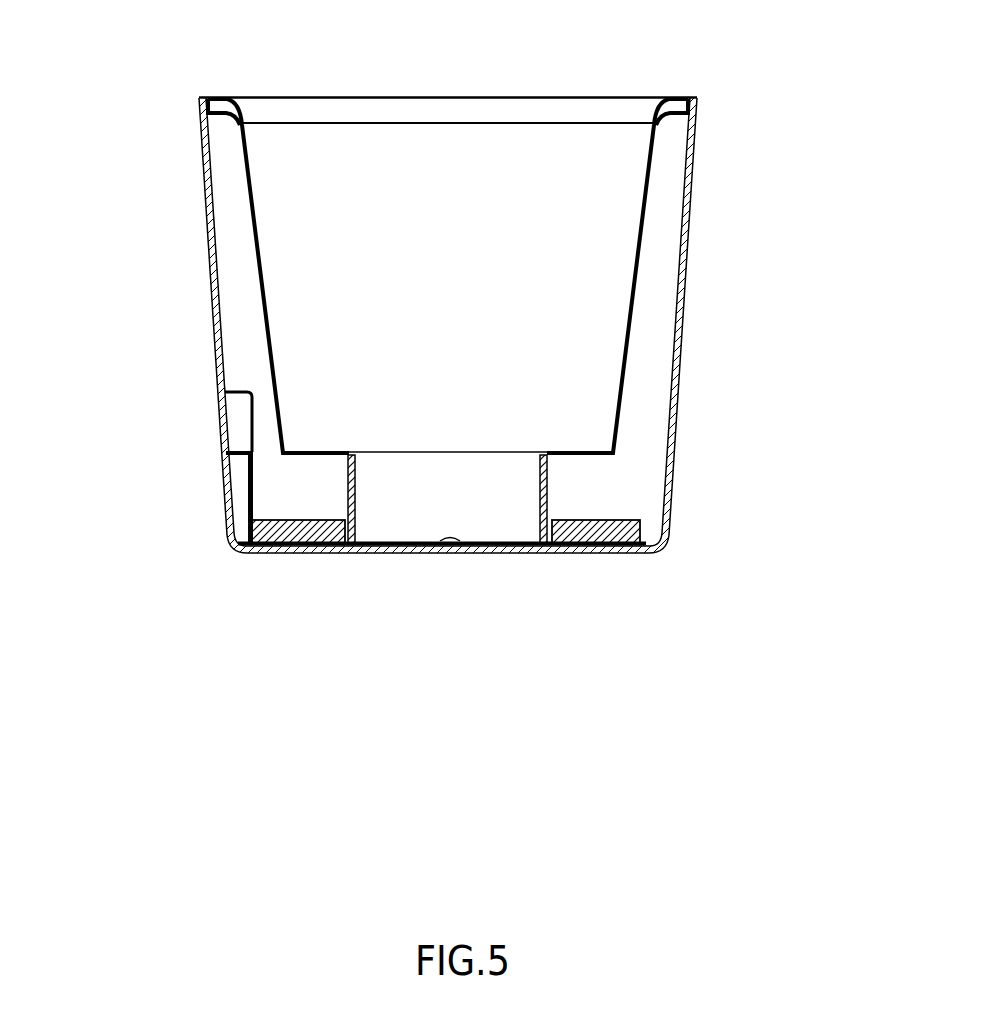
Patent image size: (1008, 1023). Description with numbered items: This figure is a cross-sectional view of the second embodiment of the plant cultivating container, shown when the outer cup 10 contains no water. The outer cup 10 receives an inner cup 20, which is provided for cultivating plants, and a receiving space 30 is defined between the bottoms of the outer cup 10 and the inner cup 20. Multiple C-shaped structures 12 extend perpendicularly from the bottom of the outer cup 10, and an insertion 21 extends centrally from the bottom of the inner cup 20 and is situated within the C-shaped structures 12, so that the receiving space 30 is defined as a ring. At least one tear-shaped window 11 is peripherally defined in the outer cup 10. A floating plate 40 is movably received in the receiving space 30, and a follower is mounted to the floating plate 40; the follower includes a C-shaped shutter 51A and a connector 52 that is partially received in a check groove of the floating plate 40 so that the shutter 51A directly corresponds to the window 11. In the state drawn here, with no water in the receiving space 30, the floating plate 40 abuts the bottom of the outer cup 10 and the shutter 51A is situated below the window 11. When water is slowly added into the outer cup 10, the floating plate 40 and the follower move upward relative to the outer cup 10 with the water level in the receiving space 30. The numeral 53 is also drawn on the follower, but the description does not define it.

The outer cup 10 is at (470, 326).
The window 11 is at (215, 360).
The C-shaped structure 12 is at (550, 502).
The inner cup 20 is at (535, 371).
The insertion 21 is at (362, 508).
The receiving space 30 is at (597, 493).
The floating plate 40 is at (312, 532).
The shutter 51A is at (247, 421).
The connector 52 is at (245, 527).
The vertical wall of hook 53 is at (250, 478).